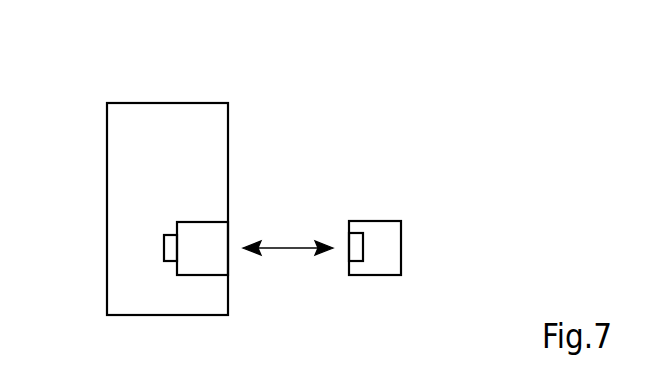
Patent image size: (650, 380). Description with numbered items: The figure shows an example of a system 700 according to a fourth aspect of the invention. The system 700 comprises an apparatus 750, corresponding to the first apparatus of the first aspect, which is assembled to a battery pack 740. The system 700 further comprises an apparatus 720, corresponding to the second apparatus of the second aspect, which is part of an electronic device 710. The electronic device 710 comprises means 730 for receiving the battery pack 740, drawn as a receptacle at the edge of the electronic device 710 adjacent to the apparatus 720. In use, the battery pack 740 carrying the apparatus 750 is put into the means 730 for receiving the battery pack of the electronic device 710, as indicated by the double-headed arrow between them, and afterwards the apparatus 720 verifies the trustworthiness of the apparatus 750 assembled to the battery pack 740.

The system 700 is at (433, 99).
The electronic device 710 is at (107, 143).
The apparatus 720 is at (168, 264).
The means for receiving the battery pack 730 is at (192, 221).
The battery pack 740 is at (384, 220).
The apparatus 750 is at (359, 273).